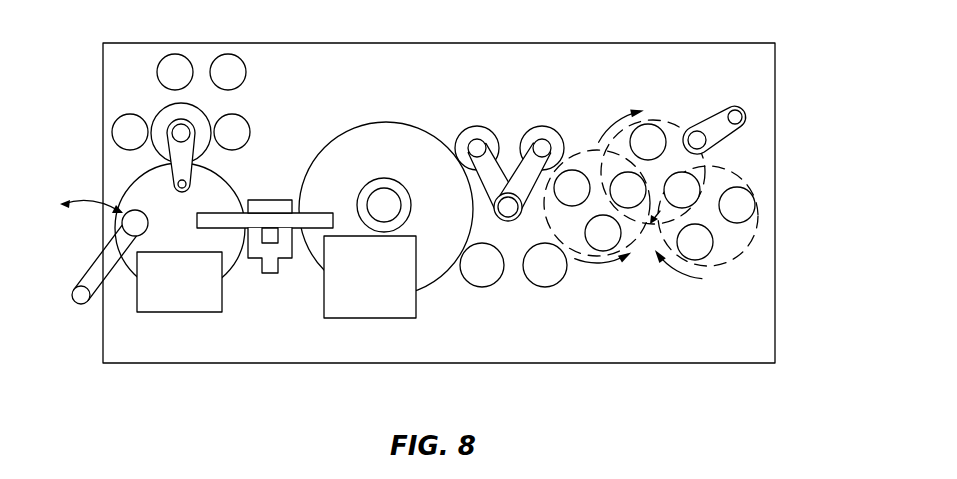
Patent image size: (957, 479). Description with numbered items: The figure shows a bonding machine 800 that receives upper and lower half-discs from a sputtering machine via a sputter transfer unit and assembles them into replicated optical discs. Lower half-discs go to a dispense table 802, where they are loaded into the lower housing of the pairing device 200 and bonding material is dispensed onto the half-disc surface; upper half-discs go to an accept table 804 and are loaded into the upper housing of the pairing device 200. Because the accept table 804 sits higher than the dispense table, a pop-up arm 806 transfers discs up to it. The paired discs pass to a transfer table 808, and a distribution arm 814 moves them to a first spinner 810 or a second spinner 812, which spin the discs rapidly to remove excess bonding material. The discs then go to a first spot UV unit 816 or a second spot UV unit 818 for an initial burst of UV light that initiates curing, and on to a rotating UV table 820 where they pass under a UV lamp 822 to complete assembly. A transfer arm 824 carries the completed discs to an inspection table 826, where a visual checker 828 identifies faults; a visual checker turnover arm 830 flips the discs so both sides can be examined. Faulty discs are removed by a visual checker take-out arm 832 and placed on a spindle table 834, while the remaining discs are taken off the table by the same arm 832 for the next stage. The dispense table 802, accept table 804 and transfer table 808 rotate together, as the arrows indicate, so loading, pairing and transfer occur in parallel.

The bonding machine 800 is at (208, 363).
The dispense table 802 is at (747, 250).
The accept table 804 is at (673, 123).
The pop-up arm 806 is at (737, 107).
The transfer table 808 is at (590, 150).
The first spinner 810 is at (537, 125).
The second spinner 812 is at (547, 288).
The distribution arm 814 is at (505, 140).
The first spot UV unit 816 is at (456, 138).
The second spot UV unit 818 is at (482, 287).
The rotating UV table 820 is at (362, 122).
The UV lamp 822 is at (370, 318).
The transfer arm 824 is at (281, 198).
The inspection table 826 is at (135, 172).
The visual checker 828 is at (180, 312).
The visual checker turnover arm 830 is at (270, 273).
The visual checker take-out arm 832 is at (173, 123).
The spindle table 834 is at (112, 125).
The pairing device 200 is at (705, 170).